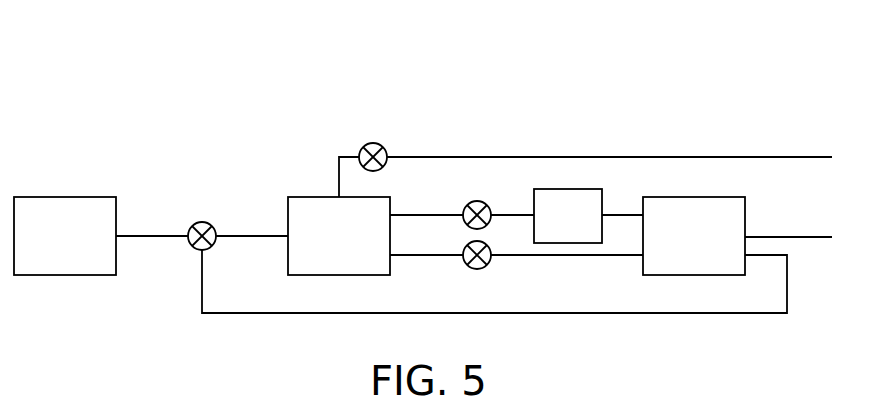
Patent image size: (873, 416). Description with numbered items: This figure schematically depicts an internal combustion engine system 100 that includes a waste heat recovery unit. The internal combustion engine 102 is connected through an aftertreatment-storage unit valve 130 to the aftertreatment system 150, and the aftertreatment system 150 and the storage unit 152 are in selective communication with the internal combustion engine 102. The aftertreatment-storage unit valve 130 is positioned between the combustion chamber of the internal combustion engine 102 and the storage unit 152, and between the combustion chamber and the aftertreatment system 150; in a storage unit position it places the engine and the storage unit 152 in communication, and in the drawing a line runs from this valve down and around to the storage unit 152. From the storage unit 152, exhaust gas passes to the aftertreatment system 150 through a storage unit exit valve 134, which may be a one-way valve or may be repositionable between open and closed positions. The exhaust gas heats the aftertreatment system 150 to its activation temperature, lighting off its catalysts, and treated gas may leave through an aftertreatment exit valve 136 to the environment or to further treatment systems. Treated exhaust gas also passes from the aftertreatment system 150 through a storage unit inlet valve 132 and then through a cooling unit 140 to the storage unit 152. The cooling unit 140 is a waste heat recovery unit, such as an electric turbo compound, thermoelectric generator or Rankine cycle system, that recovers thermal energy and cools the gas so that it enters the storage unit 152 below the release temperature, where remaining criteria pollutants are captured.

The internal combustion engine system 100 is at (155, 91).
The internal combustion engine 102 is at (65, 195).
The aftertreatment-storage unit valve 130 is at (200, 222).
The storage unit inlet valve 132 is at (478, 201).
The storage unit exit valve 134 is at (477, 270).
The aftertreatment exit valve 136 is at (375, 142).
The cooling unit 140 is at (555, 188).
The aftertreatment system 150 is at (310, 195).
The storage unit 152 is at (745, 210).